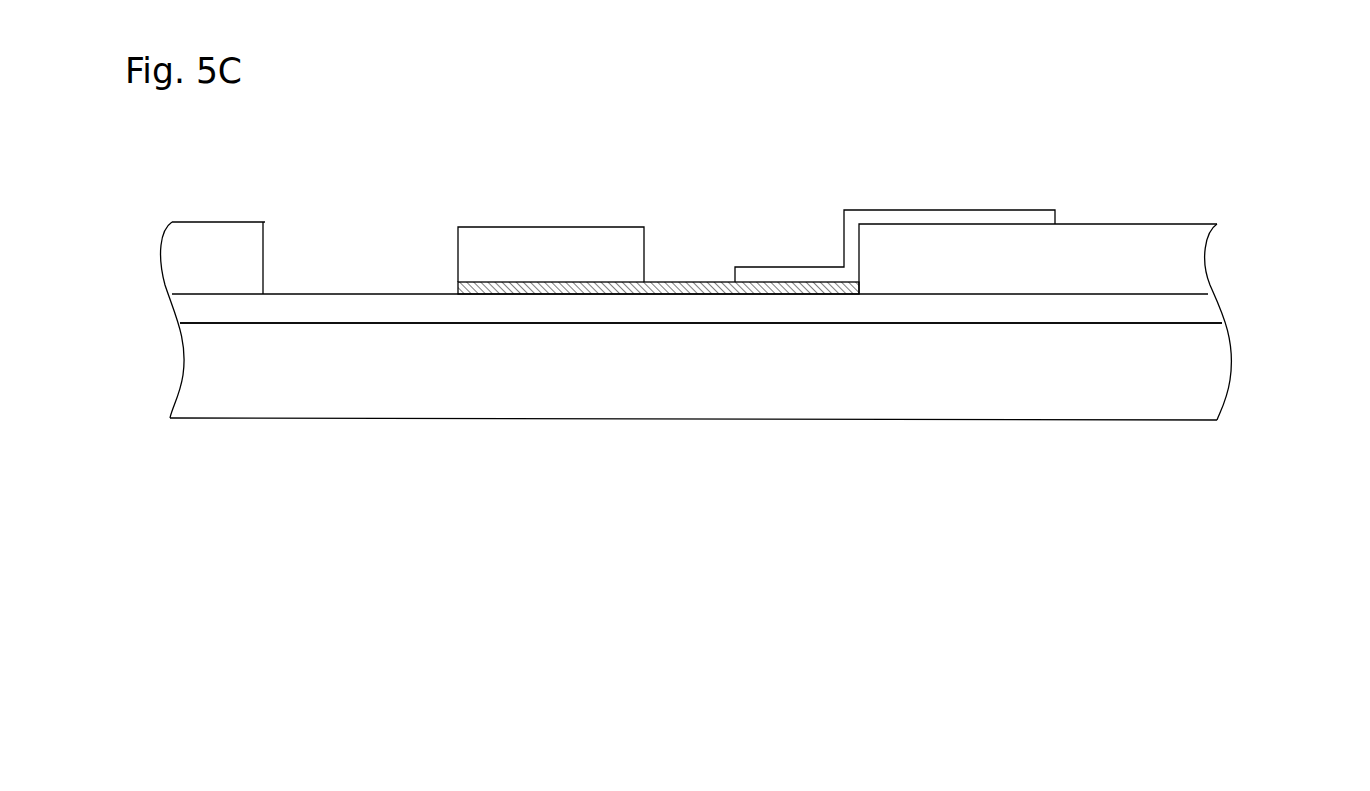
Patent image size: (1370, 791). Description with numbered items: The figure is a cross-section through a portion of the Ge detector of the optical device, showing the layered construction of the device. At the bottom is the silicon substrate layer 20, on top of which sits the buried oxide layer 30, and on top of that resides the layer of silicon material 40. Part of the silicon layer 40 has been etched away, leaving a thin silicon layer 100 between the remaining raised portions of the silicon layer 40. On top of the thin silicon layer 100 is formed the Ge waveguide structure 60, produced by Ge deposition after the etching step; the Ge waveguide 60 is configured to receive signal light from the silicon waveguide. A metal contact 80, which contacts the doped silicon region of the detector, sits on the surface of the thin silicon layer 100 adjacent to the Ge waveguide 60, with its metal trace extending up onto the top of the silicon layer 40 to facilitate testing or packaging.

The silicon substrate layer 20 is at (1198, 372).
The buried oxide layer 30 is at (1192, 305).
The layer of silicon material 40 is at (197, 260).
The Ge waveguide structure 60 is at (499, 247).
The metal contact 80 is at (928, 218).
The thin silicon layer 100 is at (803, 282).